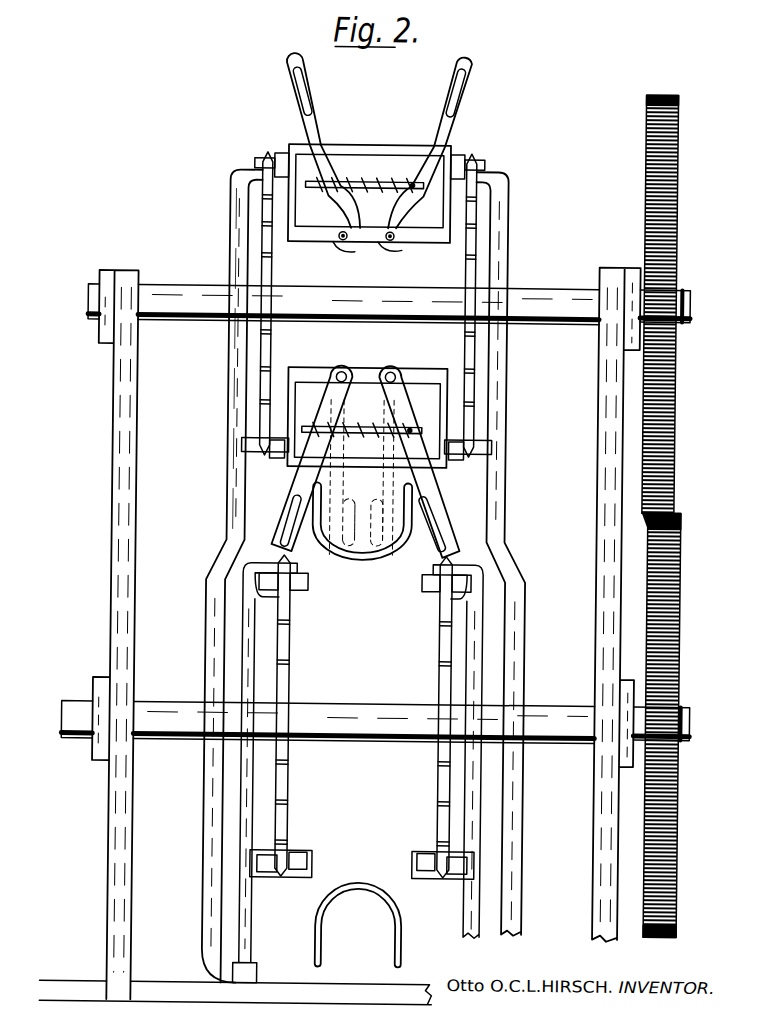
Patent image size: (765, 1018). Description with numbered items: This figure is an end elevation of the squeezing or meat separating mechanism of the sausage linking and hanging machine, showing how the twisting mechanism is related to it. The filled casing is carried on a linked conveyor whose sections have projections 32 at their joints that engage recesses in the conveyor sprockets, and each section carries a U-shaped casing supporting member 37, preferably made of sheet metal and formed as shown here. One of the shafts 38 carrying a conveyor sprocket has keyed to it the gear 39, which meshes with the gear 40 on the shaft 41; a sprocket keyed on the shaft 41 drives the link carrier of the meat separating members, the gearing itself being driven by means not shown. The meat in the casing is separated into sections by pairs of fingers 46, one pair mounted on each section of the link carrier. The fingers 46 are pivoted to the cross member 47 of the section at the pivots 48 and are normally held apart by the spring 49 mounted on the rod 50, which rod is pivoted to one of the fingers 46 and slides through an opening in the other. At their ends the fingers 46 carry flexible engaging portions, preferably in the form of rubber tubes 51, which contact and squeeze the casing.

The projections 32 is at (437, 589).
The U-shaped casing supporting member 37 is at (332, 553).
The shaft 38 is at (559, 741).
The gear 39 is at (681, 624).
The gear 40 is at (678, 375).
The shaft 41 is at (528, 286).
The fingers 46 is at (296, 136).
The cross member 47 is at (427, 234).
The pivot 48 is at (343, 241).
The spring 49 is at (368, 183).
The rod 50 is at (351, 187).
The rubber tubes 51 is at (288, 61).